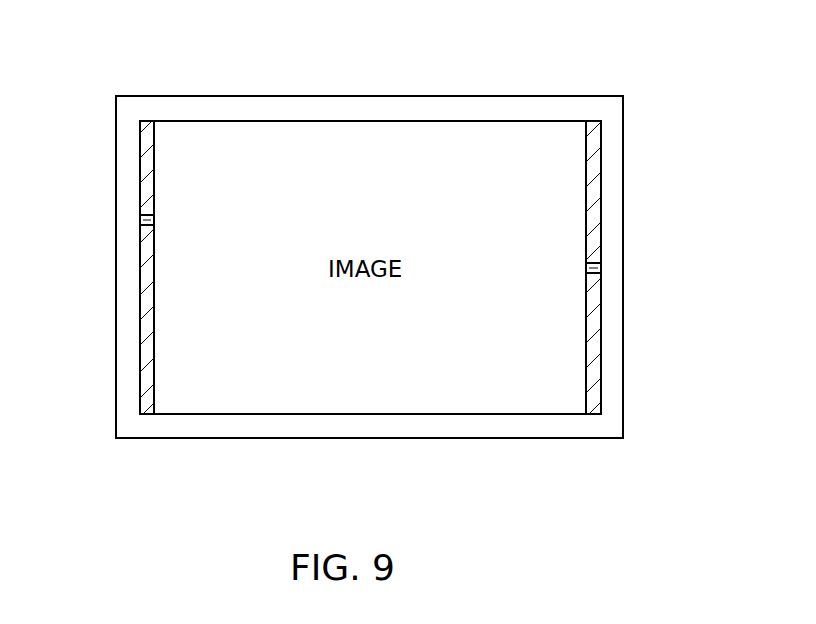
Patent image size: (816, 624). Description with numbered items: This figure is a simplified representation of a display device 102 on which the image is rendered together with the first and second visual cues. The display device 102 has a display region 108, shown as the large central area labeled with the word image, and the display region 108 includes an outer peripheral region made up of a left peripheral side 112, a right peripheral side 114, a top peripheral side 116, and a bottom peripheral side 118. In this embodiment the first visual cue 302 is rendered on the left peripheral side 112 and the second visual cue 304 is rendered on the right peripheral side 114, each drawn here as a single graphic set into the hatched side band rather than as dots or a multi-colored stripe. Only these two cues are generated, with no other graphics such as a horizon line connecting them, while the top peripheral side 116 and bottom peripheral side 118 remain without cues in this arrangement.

The display device 102 is at (538, 96).
The display region 108 is at (470, 145).
The left peripheral side 112 is at (154, 268).
The right peripheral side 114 is at (586, 207).
The top peripheral side 116 is at (370, 121).
The bottom peripheral side 118 is at (370, 414).
The first visual cue 302 is at (140, 221).
The second visual cue 304 is at (601, 268).